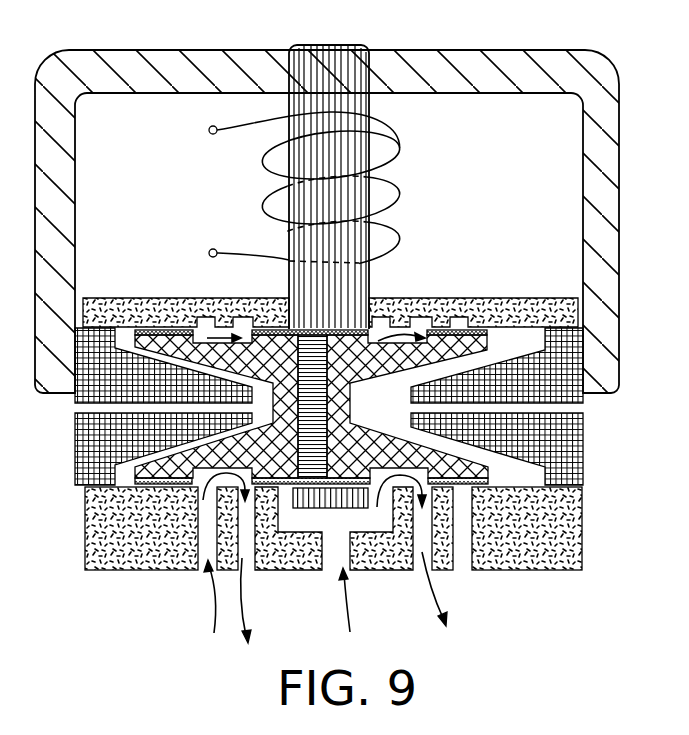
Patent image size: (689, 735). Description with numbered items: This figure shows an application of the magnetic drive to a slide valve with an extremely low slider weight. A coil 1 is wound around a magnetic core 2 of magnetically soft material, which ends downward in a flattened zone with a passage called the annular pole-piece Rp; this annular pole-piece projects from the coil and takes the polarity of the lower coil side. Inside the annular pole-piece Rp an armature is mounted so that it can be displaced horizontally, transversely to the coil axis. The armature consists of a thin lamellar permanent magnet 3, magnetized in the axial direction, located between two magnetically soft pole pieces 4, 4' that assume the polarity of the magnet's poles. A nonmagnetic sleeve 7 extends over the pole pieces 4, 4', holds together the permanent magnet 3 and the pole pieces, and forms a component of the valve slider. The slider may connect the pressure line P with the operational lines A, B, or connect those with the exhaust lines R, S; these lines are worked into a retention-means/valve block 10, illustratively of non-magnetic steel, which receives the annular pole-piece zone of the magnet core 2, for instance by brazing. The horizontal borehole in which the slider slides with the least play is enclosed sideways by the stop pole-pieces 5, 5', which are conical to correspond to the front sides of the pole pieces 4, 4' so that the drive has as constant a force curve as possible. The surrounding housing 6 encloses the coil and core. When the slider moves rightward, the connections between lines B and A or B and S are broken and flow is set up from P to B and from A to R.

The coil 1 is at (219, 203).
The magnetic core 2 is at (325, 95).
The permanent magnet 3 is at (312, 406).
The pole piece 4 is at (216, 406).
The pole piece 4' is at (407, 406).
The stop pole-piece 5 is at (163, 406).
The stop pole-piece 5' is at (497, 406).
The housing 6 is at (482, 88).
The nonmagnetic sleeve 7 is at (488, 484).
The retention-means/valve block 10 is at (520, 303).
The annular pole-piece Rp is at (361, 498).
The exhaust line S is at (202, 596).
The operational line B is at (254, 600).
The pressure line P is at (332, 600).
The operational line A is at (427, 589).
The exhaust line R is at (480, 610).